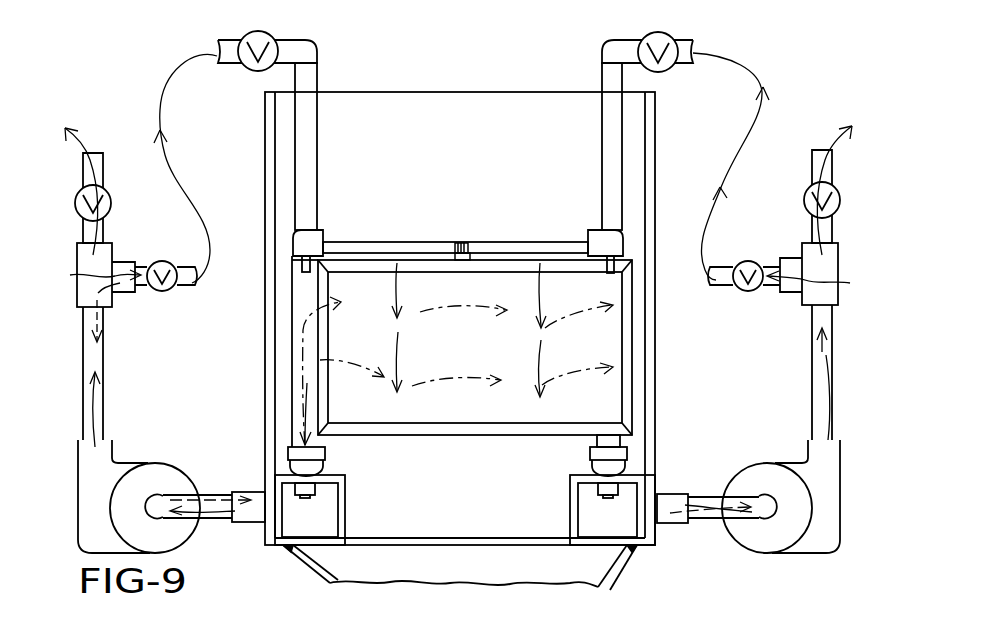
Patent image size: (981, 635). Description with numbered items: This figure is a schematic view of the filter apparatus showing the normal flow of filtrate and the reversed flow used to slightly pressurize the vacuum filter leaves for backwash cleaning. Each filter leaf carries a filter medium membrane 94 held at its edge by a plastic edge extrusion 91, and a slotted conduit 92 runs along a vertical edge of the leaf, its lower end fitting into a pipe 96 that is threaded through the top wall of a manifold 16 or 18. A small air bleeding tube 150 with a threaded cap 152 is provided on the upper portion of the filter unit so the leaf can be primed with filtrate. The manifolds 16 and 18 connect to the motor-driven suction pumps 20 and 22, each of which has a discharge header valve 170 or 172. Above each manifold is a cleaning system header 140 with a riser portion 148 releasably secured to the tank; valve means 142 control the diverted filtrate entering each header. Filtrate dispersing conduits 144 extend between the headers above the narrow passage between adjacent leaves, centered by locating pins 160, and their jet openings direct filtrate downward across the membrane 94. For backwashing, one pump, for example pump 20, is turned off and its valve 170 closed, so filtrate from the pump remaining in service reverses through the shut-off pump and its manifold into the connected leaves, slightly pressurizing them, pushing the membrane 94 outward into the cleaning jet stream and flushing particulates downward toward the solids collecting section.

The manifold 16 is at (345, 532).
The manifold 18 is at (570, 520).
The motor-driven suction pump 20 is at (168, 465).
The motor-driven suction pump 22 is at (757, 467).
The plastic edge extrusion 91 is at (417, 437).
The conduit 92 is at (292, 357).
The filter medium membrane 94 is at (470, 410).
The pipe 96 is at (325, 453).
The cleaning system header 140 is at (317, 234).
The valve means 142 is at (252, 71).
The filtrate dispersing conduit 144 is at (577, 213).
The riser portion 148 is at (317, 144).
The small diameter pipe or plastic tube 150 is at (452, 255).
The threaded cap 152 is at (458, 242).
The locating pins 160 is at (295, 271).
The discharge header valve 170 is at (75, 202).
The discharge header valve 172 is at (802, 200).